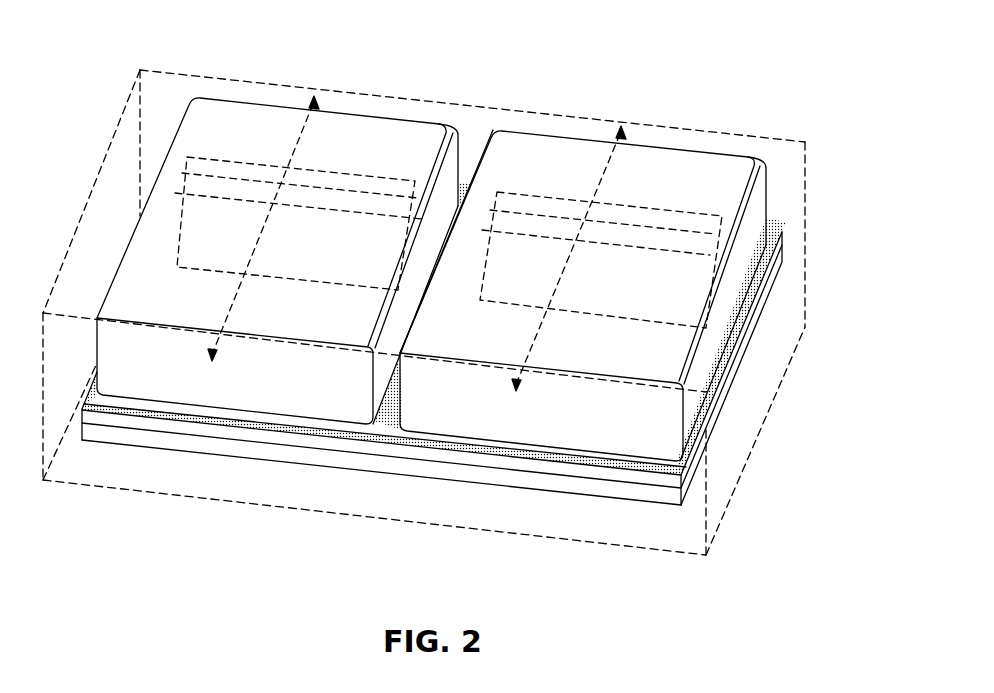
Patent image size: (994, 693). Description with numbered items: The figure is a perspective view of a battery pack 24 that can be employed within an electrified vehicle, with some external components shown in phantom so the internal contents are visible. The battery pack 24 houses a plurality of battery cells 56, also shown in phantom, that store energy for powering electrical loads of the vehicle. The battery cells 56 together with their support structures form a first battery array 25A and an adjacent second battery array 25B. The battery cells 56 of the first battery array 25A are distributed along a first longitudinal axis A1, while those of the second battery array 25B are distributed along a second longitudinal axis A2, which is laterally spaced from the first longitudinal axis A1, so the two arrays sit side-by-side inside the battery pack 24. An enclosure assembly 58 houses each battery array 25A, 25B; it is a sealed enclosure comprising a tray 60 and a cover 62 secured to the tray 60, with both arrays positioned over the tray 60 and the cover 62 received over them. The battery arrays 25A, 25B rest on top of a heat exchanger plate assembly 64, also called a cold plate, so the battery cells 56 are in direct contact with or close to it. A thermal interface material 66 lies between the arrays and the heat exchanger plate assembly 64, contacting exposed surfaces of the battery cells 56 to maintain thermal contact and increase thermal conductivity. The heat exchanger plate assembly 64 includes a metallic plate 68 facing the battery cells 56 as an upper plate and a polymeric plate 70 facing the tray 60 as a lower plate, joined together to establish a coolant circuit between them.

The battery pack 24 is at (432, 237).
The first battery array 25A is at (394, 146).
The second battery array 25B is at (707, 177).
The battery cells 56 is at (208, 157).
The enclosure assembly 58 is at (788, 137).
The tray 60 is at (210, 502).
The cover 62 is at (165, 83).
The heat exchanger plate assembly 64 is at (160, 432).
The thermal interface material 66 is at (120, 412).
The metallic plate 68 is at (240, 456).
The polymeric plate 70 is at (323, 462).
The first longitudinal axis A1 is at (263, 238).
The second longitudinal axis A2 is at (568, 275).